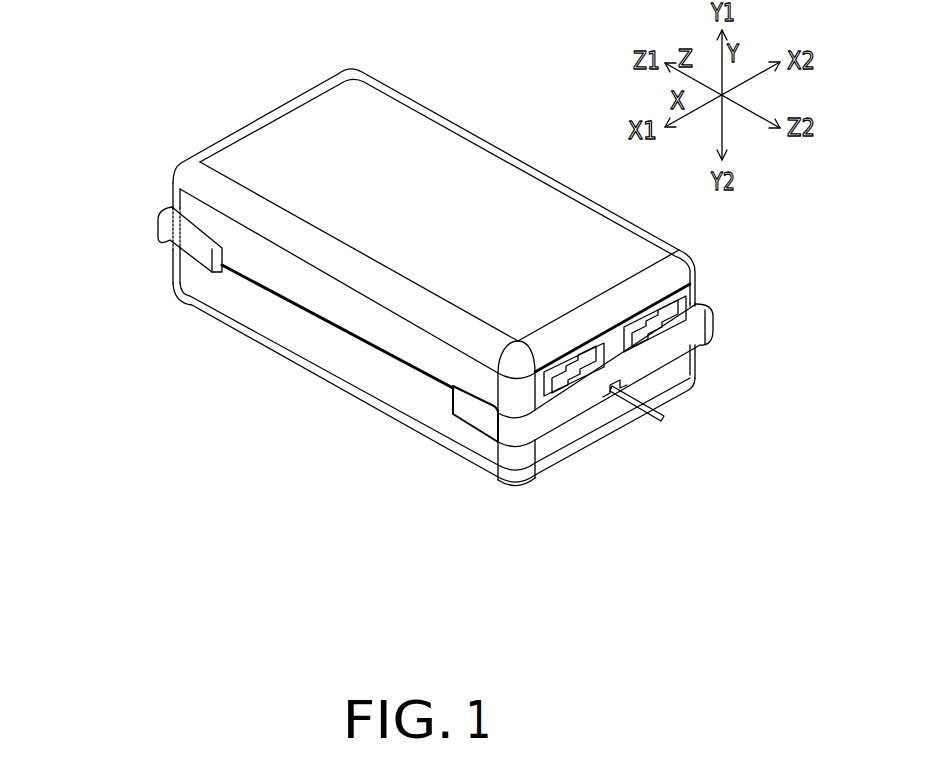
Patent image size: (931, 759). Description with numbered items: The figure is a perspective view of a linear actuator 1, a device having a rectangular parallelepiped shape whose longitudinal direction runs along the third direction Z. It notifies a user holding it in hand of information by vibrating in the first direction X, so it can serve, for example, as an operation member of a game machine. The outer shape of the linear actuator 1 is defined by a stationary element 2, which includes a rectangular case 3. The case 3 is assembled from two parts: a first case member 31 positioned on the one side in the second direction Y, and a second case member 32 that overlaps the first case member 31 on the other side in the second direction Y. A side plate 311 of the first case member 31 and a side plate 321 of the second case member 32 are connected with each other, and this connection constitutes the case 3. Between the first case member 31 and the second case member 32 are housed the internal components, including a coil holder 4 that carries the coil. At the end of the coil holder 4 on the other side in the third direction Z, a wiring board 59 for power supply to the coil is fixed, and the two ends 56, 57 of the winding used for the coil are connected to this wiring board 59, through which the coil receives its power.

The linear actuator 1 is at (207, 95).
The stationary element 2 is at (57, 352).
The case 3 is at (130, 355).
The first case member 31 is at (262, 268).
The side plate of first case member 311 is at (395, 350).
The second case member 32 is at (276, 321).
The side plate of second case member 321 is at (408, 397).
The coil holder 4 is at (163, 249).
The end of winding 56 is at (650, 416).
The end of winding 57 is at (667, 418).
The wiring board 59 is at (699, 291).